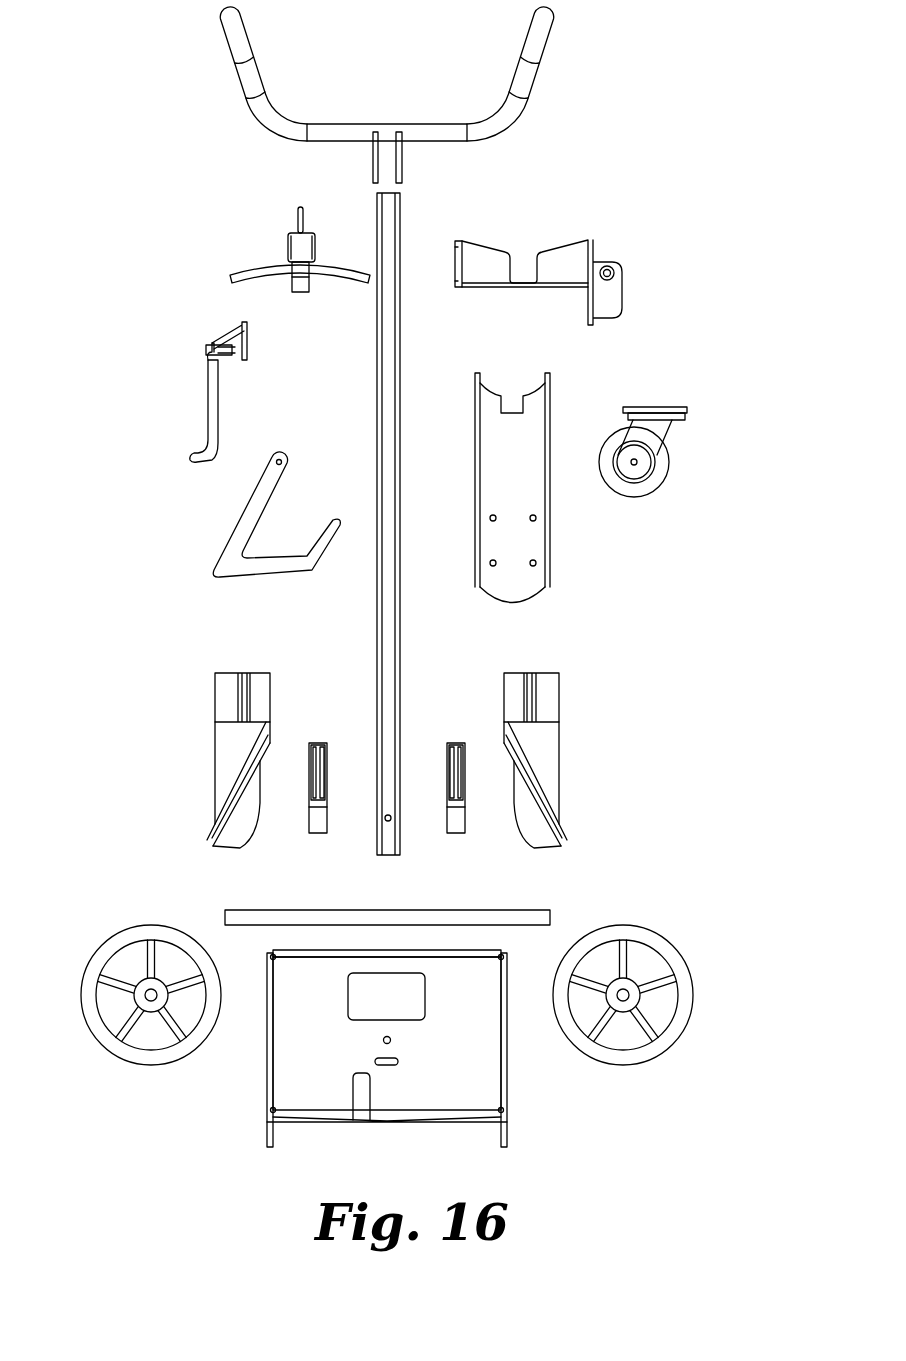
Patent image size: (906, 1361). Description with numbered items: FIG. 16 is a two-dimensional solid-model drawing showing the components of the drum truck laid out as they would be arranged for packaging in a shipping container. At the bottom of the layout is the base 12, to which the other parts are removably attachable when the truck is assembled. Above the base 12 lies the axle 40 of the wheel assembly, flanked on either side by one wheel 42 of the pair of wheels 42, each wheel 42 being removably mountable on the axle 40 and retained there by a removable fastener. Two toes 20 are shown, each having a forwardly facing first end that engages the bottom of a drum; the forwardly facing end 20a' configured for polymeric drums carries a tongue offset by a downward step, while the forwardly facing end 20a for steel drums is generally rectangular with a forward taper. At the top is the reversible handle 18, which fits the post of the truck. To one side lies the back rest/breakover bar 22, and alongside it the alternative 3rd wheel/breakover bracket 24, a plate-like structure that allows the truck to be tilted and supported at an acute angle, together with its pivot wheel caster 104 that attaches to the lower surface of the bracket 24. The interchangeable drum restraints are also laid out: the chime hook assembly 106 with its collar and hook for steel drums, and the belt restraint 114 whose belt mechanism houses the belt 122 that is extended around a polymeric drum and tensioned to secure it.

The reversible handle 18 is at (535, 85).
The chime hook assembly 106 is at (287, 237).
The belt restraint 114 is at (590, 243).
The belt 122 is at (208, 365).
The back rest/breakover bar 22 is at (218, 554).
The 3rd wheel/breakover bracket 24 is at (550, 552).
The pivot wheel caster 104 is at (690, 405).
The toes 20 is at (300, 757).
The first end 20a' is at (393, 785).
The first end 20a is at (393, 819).
The axle 40 is at (365, 908).
The wheel 42 is at (112, 1053).
The base 12 is at (508, 1097).